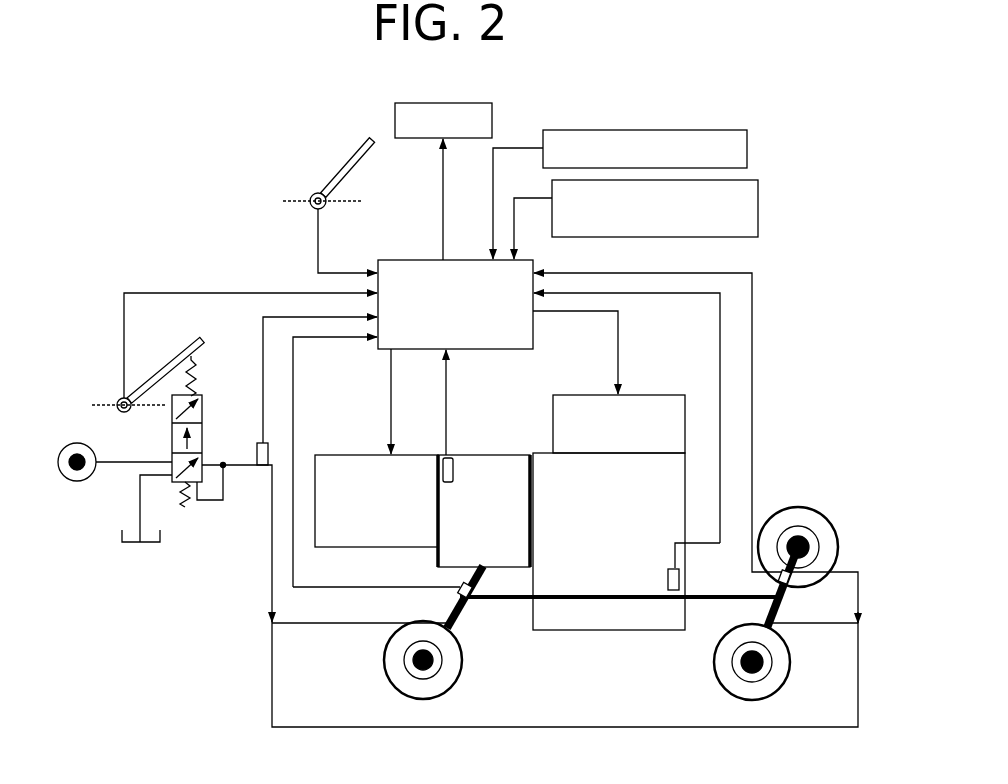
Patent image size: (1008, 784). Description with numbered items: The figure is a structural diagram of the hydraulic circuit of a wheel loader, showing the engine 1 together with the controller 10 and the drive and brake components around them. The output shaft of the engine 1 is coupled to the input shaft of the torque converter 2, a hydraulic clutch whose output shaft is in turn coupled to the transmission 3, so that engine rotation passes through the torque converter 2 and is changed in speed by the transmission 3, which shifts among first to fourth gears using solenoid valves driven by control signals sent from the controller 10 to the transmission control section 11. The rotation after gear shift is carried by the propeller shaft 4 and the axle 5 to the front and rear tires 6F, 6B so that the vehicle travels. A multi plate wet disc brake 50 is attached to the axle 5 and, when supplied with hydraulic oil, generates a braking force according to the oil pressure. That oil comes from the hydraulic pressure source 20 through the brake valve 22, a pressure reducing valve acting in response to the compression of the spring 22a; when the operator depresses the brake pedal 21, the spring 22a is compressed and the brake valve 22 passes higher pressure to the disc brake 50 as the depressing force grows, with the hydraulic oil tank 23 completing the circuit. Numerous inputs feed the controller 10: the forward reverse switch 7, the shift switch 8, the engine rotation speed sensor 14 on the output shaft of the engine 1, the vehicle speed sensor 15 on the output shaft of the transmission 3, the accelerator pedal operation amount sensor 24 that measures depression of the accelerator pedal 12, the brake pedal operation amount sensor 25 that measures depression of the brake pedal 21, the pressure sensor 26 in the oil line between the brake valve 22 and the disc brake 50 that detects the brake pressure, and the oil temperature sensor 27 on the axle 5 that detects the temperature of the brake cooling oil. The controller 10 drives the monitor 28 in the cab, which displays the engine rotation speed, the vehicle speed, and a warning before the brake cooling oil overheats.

The engine 1 is at (336, 548).
The torque converter 2 is at (440, 565).
The transmission 3 is at (675, 503).
The propeller shaft 4 is at (565, 602).
The axle 5 is at (452, 600).
The front tire 6F is at (385, 655).
The rear tire 6B is at (790, 668).
The forward reverse switch 7 is at (759, 200).
The shift switch 8 is at (750, 152).
The controller 10 is at (411, 260).
The transmission control section 11 is at (645, 403).
The accelerator pedal 12 is at (340, 168).
The engine rotation speed sensor 14 is at (445, 456).
The vehicle speed sensor 15 is at (656, 605).
The hydraulic pressure source 20 is at (65, 478).
The brake pedal 21 is at (178, 352).
The brake valve 22 is at (204, 418).
The spring 22a is at (196, 380).
The hydraulic oil tank 23 is at (120, 545).
The accelerator pedal operation amount sensor 24 is at (315, 209).
The brake pedal operation amount sensor 25 is at (118, 398).
The pressure sensor 26 is at (262, 470).
The oil temperature sensor 27 is at (478, 584).
The monitor 28 is at (497, 120).
The disc brake 50 is at (445, 668).